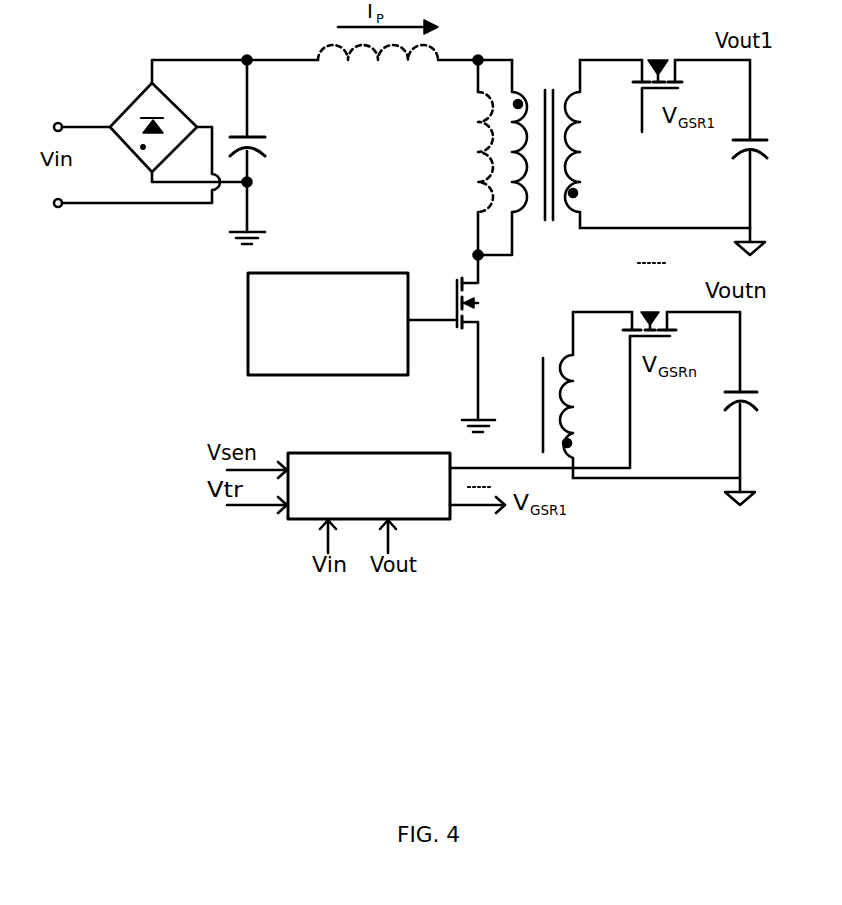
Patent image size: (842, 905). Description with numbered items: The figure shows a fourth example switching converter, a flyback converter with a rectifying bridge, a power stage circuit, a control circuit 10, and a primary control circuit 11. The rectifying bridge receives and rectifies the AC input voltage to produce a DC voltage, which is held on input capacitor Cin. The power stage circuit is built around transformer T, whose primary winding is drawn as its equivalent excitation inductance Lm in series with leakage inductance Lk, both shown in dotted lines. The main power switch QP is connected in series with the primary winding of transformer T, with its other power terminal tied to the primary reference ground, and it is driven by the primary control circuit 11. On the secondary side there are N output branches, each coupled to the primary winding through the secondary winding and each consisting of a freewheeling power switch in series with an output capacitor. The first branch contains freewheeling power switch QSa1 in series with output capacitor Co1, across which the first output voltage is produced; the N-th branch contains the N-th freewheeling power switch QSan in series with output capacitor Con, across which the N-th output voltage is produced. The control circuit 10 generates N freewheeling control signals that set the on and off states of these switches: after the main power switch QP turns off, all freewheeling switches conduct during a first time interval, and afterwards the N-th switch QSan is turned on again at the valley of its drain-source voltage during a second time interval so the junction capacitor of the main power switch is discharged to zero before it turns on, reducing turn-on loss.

The control circuit 10 is at (380, 512).
The primary control circuit 11 is at (342, 364).
The input capacitor Cin is at (270, 152).
The leakage inductance Lk is at (378, 67).
The excitation inductance Lm is at (462, 157).
The transformer T is at (529, 269).
The main power switch QP is at (457, 343).
The freewheeling power switch QSa1 is at (658, 80).
The N-th freewheeling power switch QSan is at (652, 307).
The output capacitor Co1 is at (770, 157).
The output capacitor Con is at (761, 408).